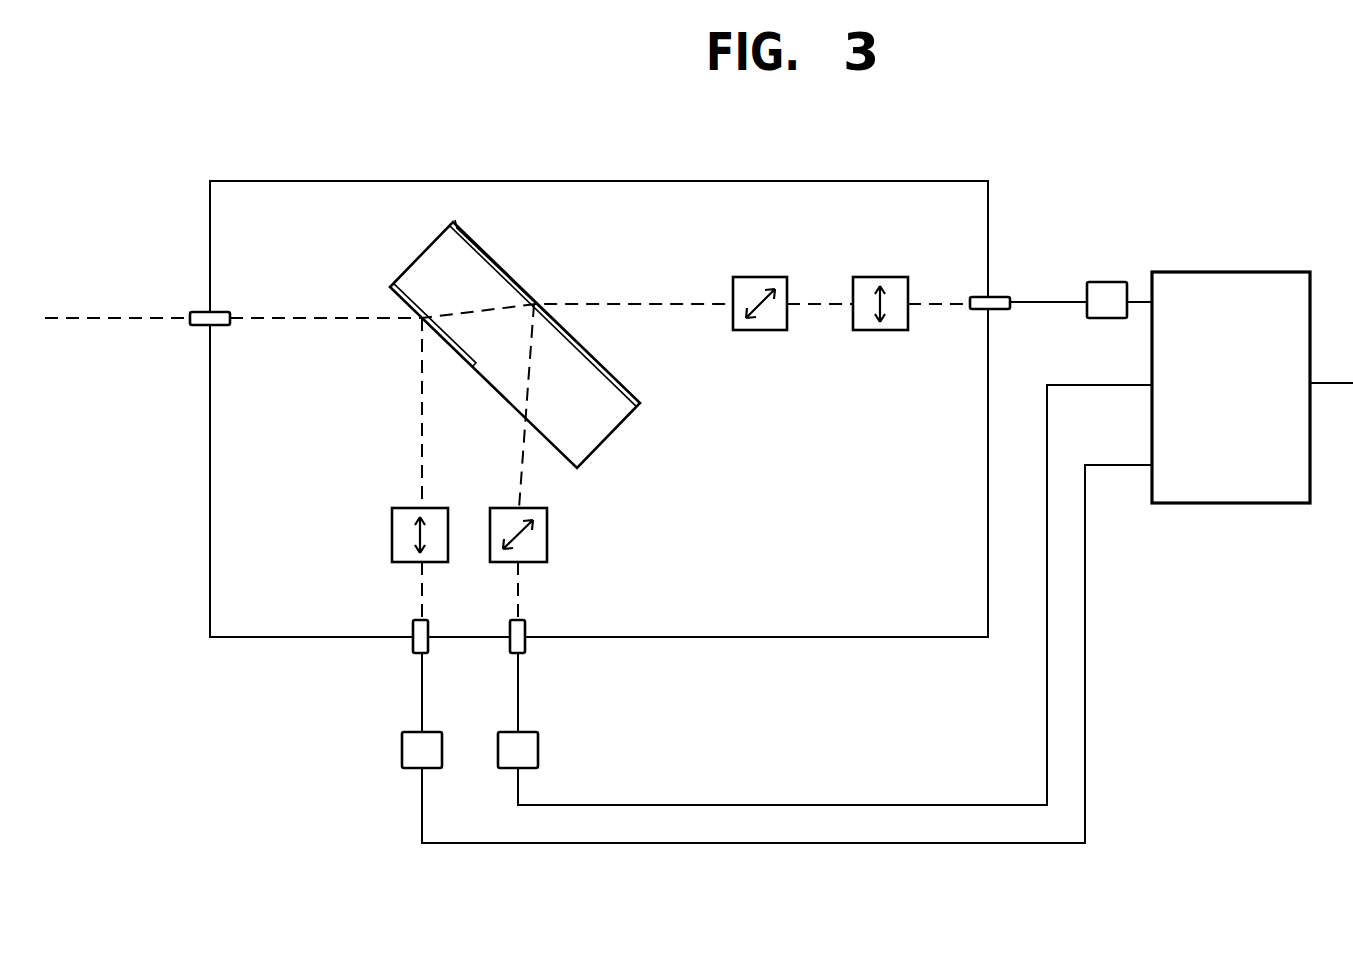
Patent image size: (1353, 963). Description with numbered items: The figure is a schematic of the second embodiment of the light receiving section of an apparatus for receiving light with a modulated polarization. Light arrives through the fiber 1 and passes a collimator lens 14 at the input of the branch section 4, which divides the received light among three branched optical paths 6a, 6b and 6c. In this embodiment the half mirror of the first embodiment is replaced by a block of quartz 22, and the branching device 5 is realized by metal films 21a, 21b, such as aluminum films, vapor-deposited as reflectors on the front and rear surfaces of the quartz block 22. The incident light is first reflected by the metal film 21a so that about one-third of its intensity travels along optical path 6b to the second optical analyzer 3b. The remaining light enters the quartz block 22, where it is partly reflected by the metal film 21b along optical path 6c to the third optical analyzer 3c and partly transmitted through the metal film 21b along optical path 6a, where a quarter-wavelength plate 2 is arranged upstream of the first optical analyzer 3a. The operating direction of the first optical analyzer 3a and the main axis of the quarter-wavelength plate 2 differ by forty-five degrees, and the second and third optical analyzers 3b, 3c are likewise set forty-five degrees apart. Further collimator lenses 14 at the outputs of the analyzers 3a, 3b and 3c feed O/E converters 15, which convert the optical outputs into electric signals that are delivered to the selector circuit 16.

The fiber 1 is at (68, 322).
The quarter-wavelength plate 2 is at (733, 303).
The first optical analyzer 3a is at (880, 331).
The second optical analyzer 3b is at (392, 531).
The third optical analyzer 3c is at (547, 535).
The branch section 4 is at (308, 181).
The branching device 5 is at (615, 430).
The branched optical path 6a is at (663, 306).
The branched optical path 6b is at (421, 440).
The branched optical path 6c is at (520, 455).
The collimator lens 14 is at (197, 312).
The O/E converter 15 is at (1105, 282).
The selector circuit 16 is at (1230, 504).
The metal film 21a is at (391, 296).
The metal film 21b is at (492, 258).
The quartz block 22 is at (512, 388).